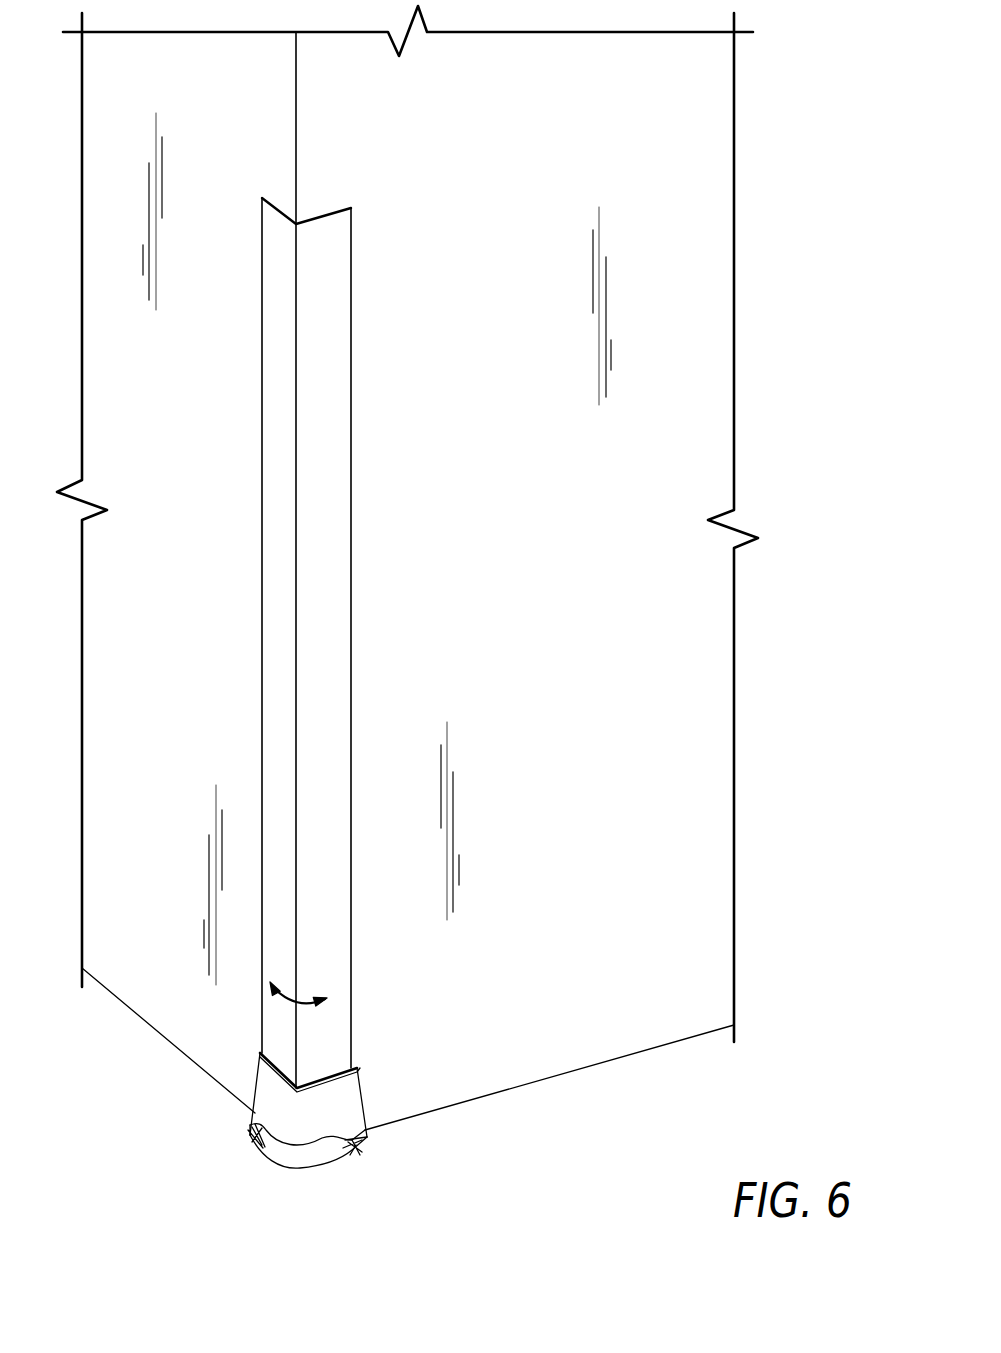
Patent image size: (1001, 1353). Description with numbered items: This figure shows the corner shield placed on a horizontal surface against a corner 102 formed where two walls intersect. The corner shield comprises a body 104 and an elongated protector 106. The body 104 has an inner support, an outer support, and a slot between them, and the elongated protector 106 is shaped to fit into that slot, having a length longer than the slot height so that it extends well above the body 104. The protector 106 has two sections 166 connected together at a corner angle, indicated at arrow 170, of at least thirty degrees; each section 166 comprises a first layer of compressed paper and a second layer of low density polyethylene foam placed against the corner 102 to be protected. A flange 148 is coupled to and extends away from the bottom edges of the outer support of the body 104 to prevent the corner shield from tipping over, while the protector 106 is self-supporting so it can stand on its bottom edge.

The corner 102 is at (300, 172).
The body 104 is at (389, 1087).
The elongated protector 106 is at (402, 336).
The flange 148 is at (290, 1160).
The sections 166 is at (320, 542).
The arrow 170 is at (271, 988).